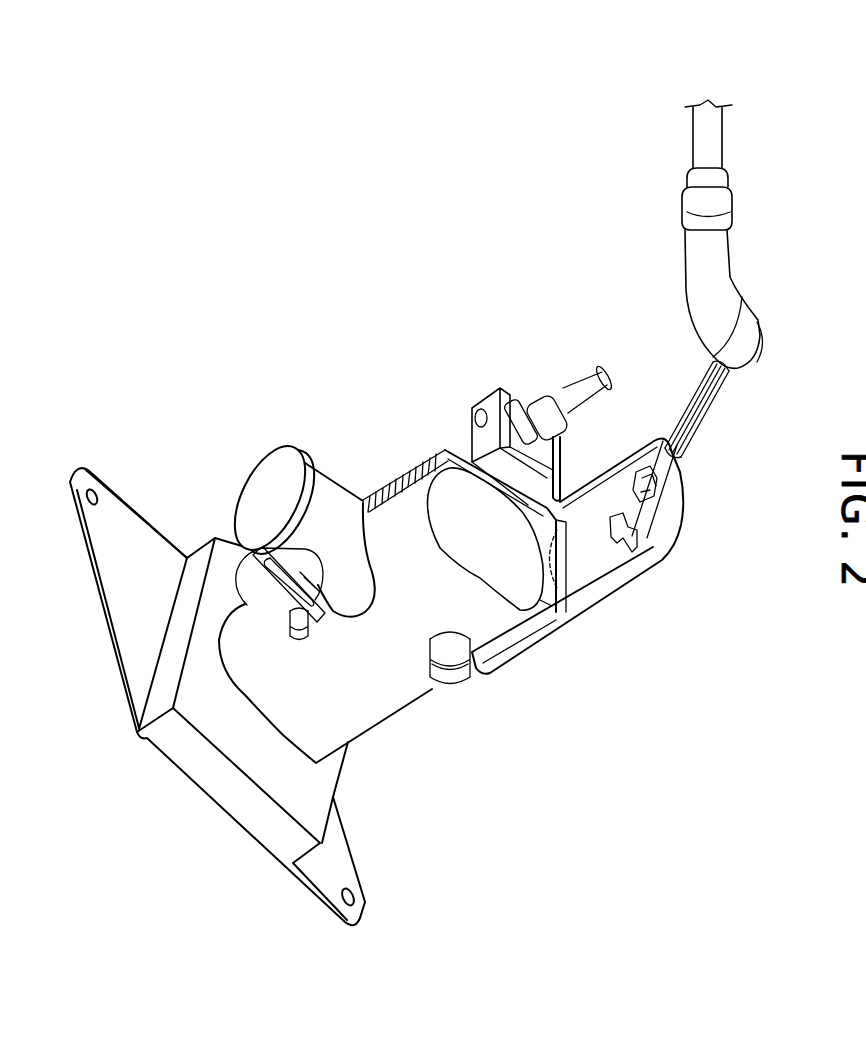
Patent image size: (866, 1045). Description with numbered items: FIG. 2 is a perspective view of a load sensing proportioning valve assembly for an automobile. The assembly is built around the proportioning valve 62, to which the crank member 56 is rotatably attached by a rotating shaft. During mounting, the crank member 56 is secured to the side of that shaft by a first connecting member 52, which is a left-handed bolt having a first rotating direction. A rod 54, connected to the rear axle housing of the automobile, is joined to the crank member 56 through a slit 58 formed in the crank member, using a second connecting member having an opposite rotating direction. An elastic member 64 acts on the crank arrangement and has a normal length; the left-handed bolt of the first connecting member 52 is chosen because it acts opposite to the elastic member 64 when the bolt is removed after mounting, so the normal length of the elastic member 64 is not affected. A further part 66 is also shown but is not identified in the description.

The first connecting member 52 is at (555, 613).
The rod 54 is at (700, 388).
The crank member 56 is at (595, 590).
The slit 58 is at (652, 530).
The proportioning valve 62 is at (387, 700).
The elastic member 64 is at (397, 478).
The mounting lug 66 is at (480, 410).